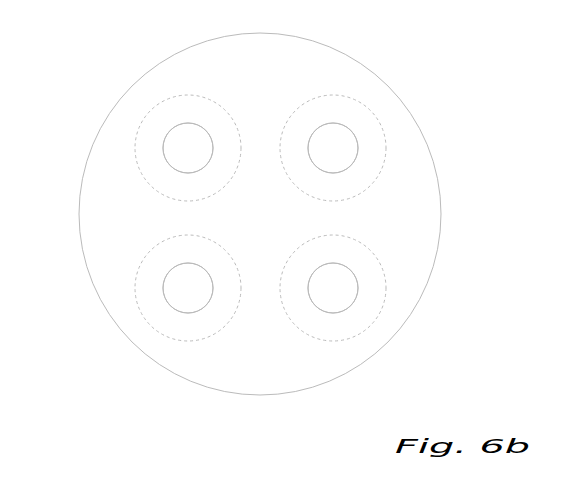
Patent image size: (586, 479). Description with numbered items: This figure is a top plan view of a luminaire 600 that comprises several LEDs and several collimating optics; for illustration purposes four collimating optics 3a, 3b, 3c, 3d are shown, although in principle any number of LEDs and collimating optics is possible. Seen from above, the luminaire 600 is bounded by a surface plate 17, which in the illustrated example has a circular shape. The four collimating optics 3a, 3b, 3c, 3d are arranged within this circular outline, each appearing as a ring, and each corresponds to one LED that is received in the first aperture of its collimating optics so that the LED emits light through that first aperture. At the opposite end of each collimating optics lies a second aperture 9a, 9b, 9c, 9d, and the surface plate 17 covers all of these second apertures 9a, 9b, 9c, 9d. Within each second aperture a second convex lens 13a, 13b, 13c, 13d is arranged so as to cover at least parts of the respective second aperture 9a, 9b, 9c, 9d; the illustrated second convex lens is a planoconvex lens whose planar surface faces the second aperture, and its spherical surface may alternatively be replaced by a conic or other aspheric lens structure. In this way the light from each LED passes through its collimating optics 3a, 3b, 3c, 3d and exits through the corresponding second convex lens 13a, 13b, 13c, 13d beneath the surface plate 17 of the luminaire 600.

The luminaire 600 is at (434, 80).
The surface plate 17 is at (82, 192).
The collimating optics 3a is at (158, 333).
The collimating optics 3b is at (377, 317).
The collimating optics 3c is at (165, 100).
The collimating optics 3d is at (387, 147).
The second aperture 9a is at (153, 270).
The second aperture 9b is at (363, 268).
The second aperture 9c is at (150, 130).
The second aperture 9d is at (358, 117).
The second convex lens 13a is at (195, 297).
The second convex lens 13b is at (328, 273).
The second convex lens 13c is at (195, 157).
The second convex lens 13d is at (323, 138).